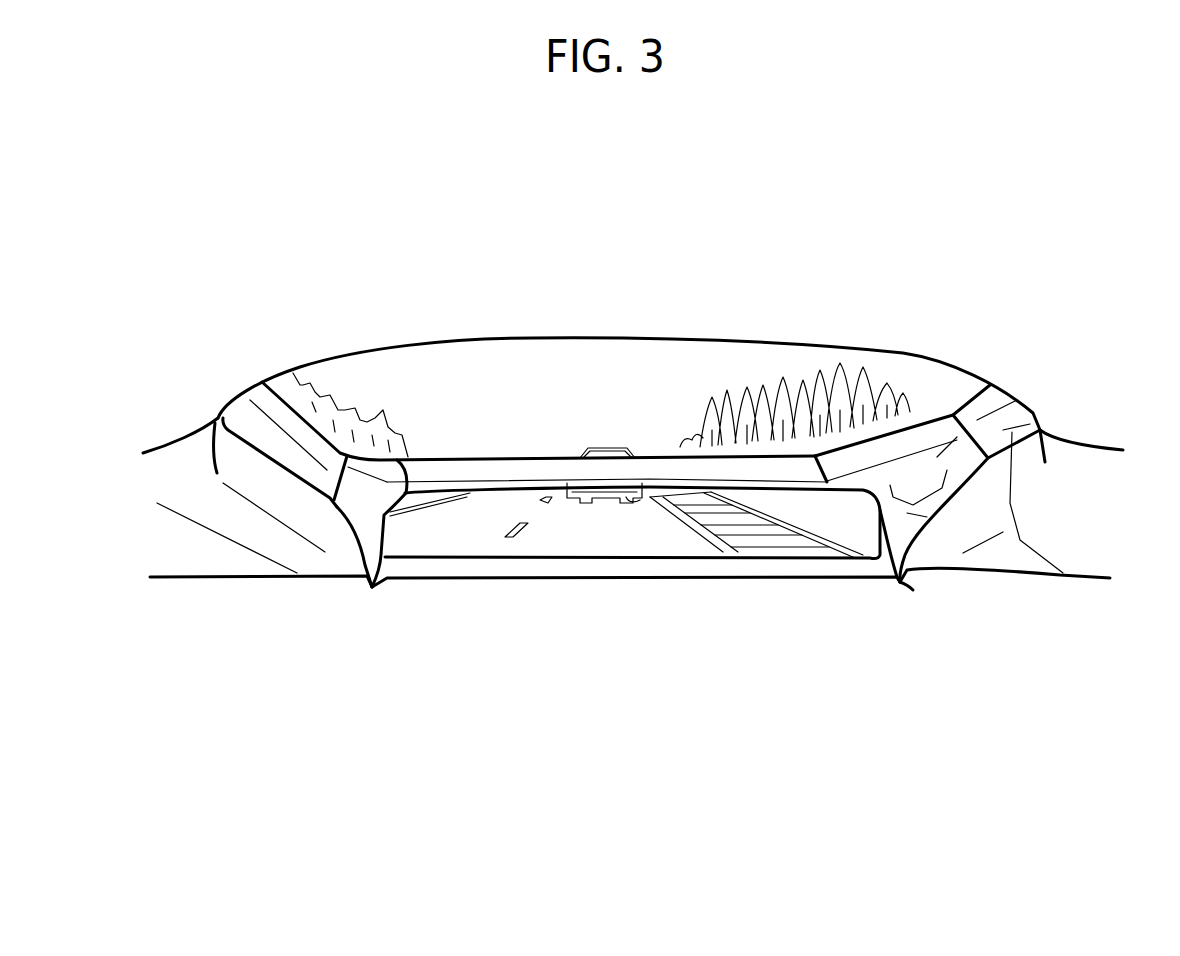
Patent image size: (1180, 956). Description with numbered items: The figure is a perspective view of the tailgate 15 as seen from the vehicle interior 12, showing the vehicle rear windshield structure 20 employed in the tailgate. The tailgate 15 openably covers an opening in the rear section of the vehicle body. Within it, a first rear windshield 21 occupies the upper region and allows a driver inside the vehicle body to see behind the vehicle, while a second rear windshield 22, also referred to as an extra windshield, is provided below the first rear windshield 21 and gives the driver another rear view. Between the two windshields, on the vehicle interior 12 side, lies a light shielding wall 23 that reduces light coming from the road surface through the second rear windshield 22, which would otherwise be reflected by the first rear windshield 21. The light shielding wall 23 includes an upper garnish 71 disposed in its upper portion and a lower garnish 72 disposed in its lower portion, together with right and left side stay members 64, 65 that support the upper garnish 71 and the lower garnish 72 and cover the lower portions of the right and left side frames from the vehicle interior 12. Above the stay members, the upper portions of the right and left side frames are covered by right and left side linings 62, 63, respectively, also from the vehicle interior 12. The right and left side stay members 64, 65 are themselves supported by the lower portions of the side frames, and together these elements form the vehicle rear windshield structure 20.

The vehicle interior 12 is at (583, 593).
The tailgate 15 is at (833, 343).
The vehicle rear windshield structure 20 is at (320, 203).
The first rear windshield 21 is at (418, 380).
The second rear windshield 22 is at (555, 523).
The light shielding wall 23 is at (663, 262).
The upper garnish 71 is at (455, 472).
The lower garnish 72 is at (510, 482).
The right side lining 62 is at (1030, 435).
The left side lining 63 is at (300, 455).
The right side stay member 64 is at (907, 513).
The left side stay member 65 is at (363, 513).